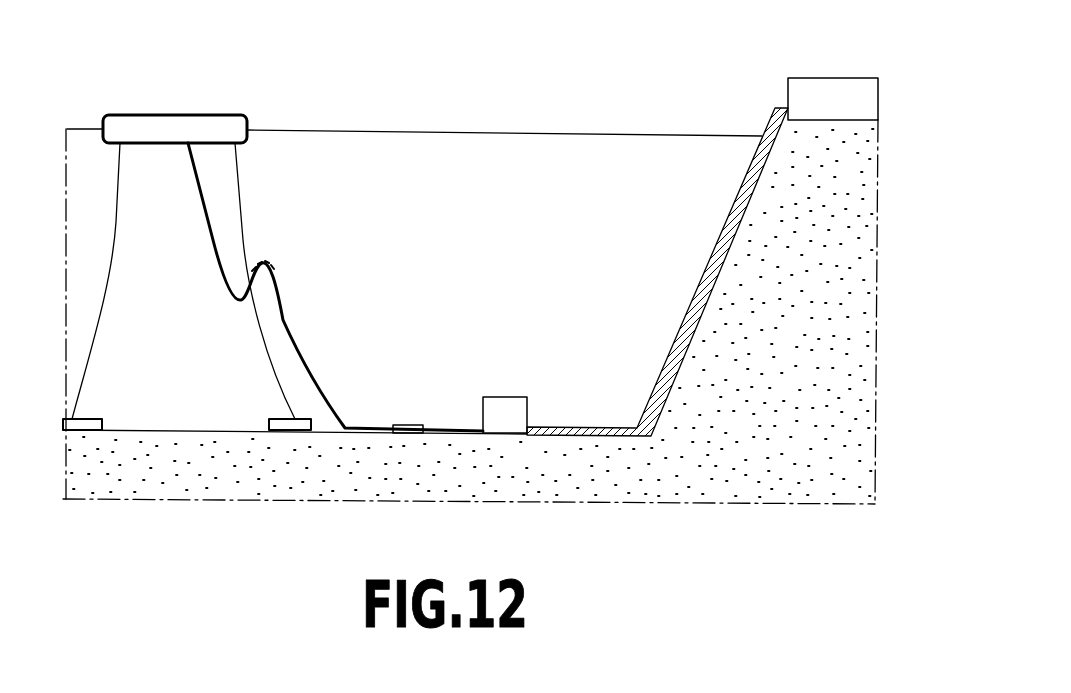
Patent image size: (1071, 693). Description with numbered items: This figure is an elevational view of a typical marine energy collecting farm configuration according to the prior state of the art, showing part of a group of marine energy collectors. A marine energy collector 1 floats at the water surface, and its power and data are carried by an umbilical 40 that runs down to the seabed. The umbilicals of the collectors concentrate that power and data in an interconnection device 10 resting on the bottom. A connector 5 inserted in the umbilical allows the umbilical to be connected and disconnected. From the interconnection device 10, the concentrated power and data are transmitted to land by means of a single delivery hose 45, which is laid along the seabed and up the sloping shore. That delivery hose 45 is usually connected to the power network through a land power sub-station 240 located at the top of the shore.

The marine energy collector 1 is at (165, 128).
The connector 5 is at (405, 426).
The interconnection device 10 is at (510, 400).
The umbilical 40 is at (290, 328).
The delivery hose 45 is at (707, 268).
The land power sub-station 240 is at (815, 95).